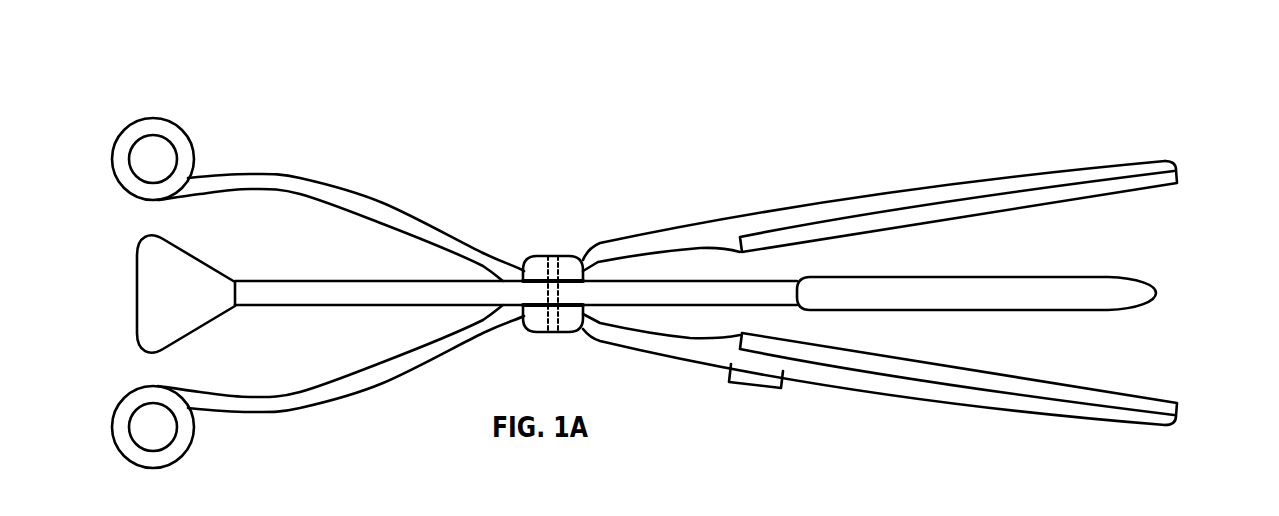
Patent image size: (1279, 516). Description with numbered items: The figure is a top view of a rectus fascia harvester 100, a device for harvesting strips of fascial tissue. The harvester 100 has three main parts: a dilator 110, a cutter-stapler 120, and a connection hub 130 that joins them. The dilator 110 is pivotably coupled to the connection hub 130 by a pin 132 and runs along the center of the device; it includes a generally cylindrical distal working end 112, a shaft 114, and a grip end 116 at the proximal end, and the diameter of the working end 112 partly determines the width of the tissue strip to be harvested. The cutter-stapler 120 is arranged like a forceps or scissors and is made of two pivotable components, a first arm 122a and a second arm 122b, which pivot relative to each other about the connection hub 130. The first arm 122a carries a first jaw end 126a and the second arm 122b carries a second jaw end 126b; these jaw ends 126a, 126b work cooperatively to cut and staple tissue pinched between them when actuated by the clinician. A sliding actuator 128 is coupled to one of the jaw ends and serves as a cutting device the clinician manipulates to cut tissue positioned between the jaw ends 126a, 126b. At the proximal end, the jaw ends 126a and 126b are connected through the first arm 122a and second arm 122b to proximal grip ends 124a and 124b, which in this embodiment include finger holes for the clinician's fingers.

The rectus fascia harvester 100 is at (870, 103).
The dilator 110 is at (699, 285).
The distal working end 112 is at (1018, 273).
The shaft 114 is at (297, 306).
The grip end 116 is at (197, 258).
The cutter-stapler 120 is at (980, 264).
The first arm 122a is at (367, 390).
The second arm 122b is at (340, 185).
The proximal grip end 124a is at (193, 428).
The proximal grip end 124b is at (185, 132).
The first jaw end 126a is at (1128, 197).
The second jaw end 126b is at (1120, 392).
The sliding actuator 128 is at (762, 387).
The connection hub 130 is at (533, 257).
The pin 132 is at (563, 268).